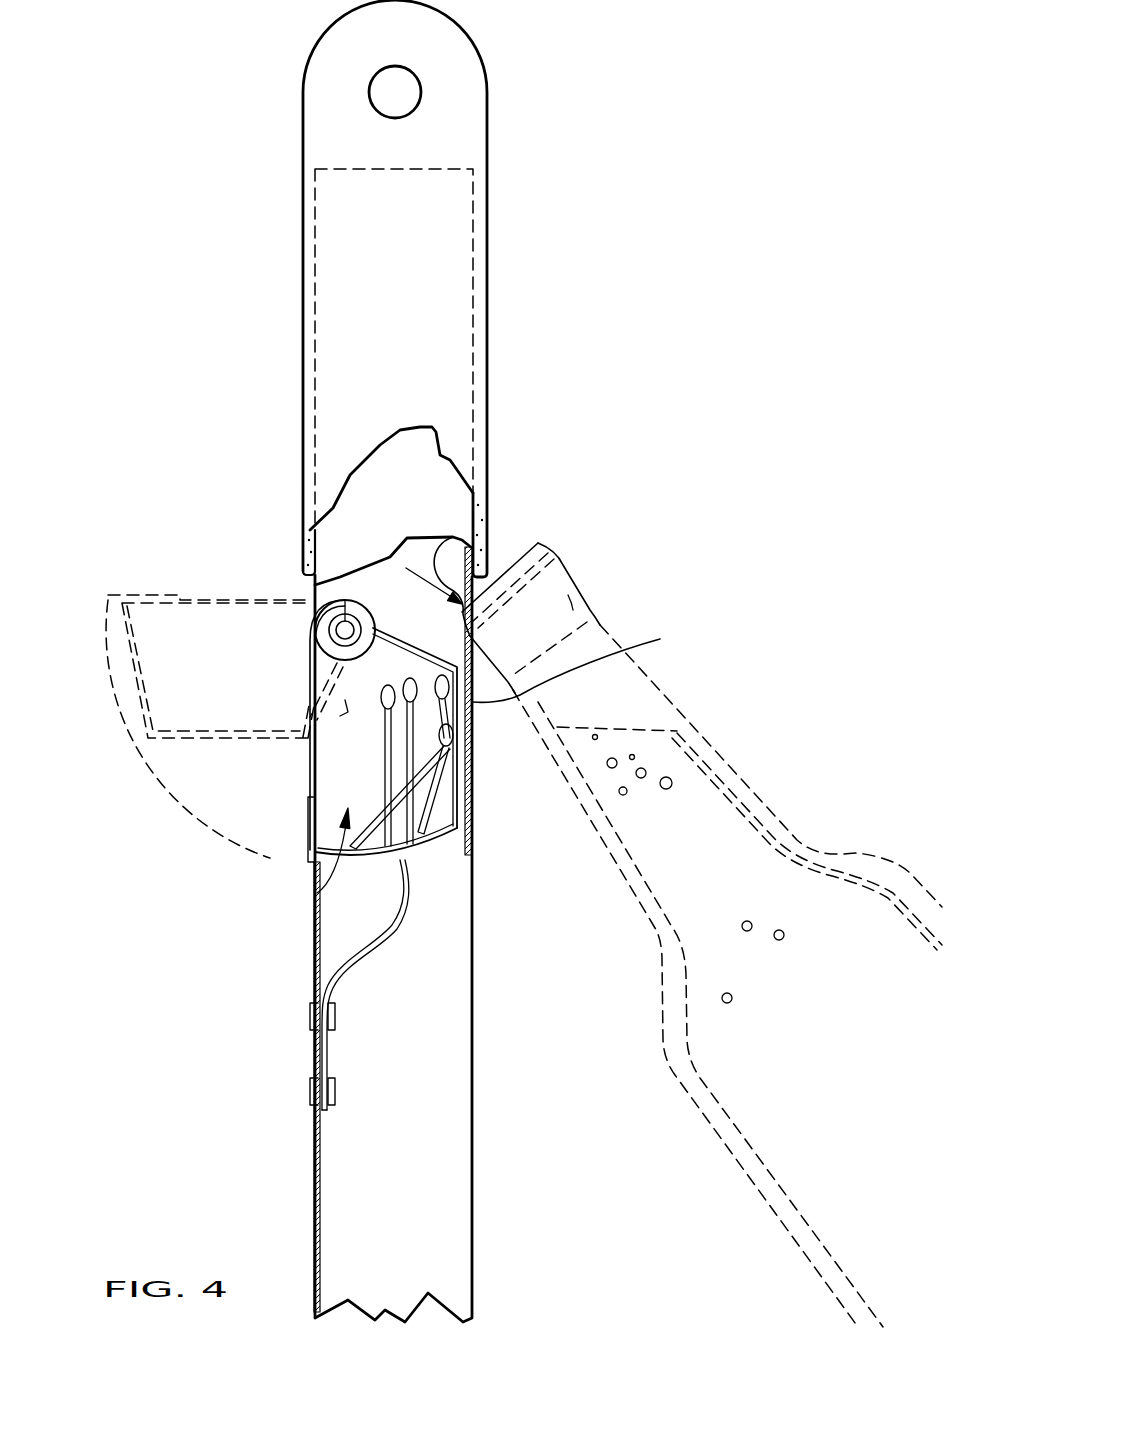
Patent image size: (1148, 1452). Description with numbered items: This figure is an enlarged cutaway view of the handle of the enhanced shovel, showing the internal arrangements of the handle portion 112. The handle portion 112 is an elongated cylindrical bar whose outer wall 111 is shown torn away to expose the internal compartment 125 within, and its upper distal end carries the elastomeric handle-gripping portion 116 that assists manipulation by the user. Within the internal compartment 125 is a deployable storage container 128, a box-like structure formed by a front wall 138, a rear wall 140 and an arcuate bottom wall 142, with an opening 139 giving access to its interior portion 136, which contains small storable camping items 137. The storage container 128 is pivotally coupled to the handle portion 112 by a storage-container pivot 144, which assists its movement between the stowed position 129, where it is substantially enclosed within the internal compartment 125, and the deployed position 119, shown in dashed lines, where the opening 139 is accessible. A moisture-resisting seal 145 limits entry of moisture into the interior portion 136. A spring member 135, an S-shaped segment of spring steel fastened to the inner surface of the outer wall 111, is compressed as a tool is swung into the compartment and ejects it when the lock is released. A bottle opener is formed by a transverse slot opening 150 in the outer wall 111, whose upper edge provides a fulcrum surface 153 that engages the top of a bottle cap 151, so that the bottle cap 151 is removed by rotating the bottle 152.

The outer wall 111 is at (373, 503).
The handle portion 112 is at (290, 1166).
The handle-gripping portion 116 is at (487, 86).
The deployed position 119 is at (155, 558).
The internal compartment 125 is at (353, 905).
The storage container 128 is at (308, 813).
The stowed position 129 is at (198, 790).
The spring member 135 is at (372, 945).
The interior portion 136 is at (317, 895).
The small storable camping items 137 is at (433, 790).
The front wall 138 is at (312, 768).
The opening 139 is at (345, 700).
The rear wall 140 is at (450, 755).
The arcuate bottom wall 142 is at (430, 840).
The storage-container pivot 144 is at (347, 600).
The moisture-resisting seal 145 is at (317, 851).
The transverse slot opening 150 is at (406, 568).
The bottle cap 151 is at (560, 560).
The bottle 152 is at (724, 750).
The fulcrum surface 153 is at (452, 538).